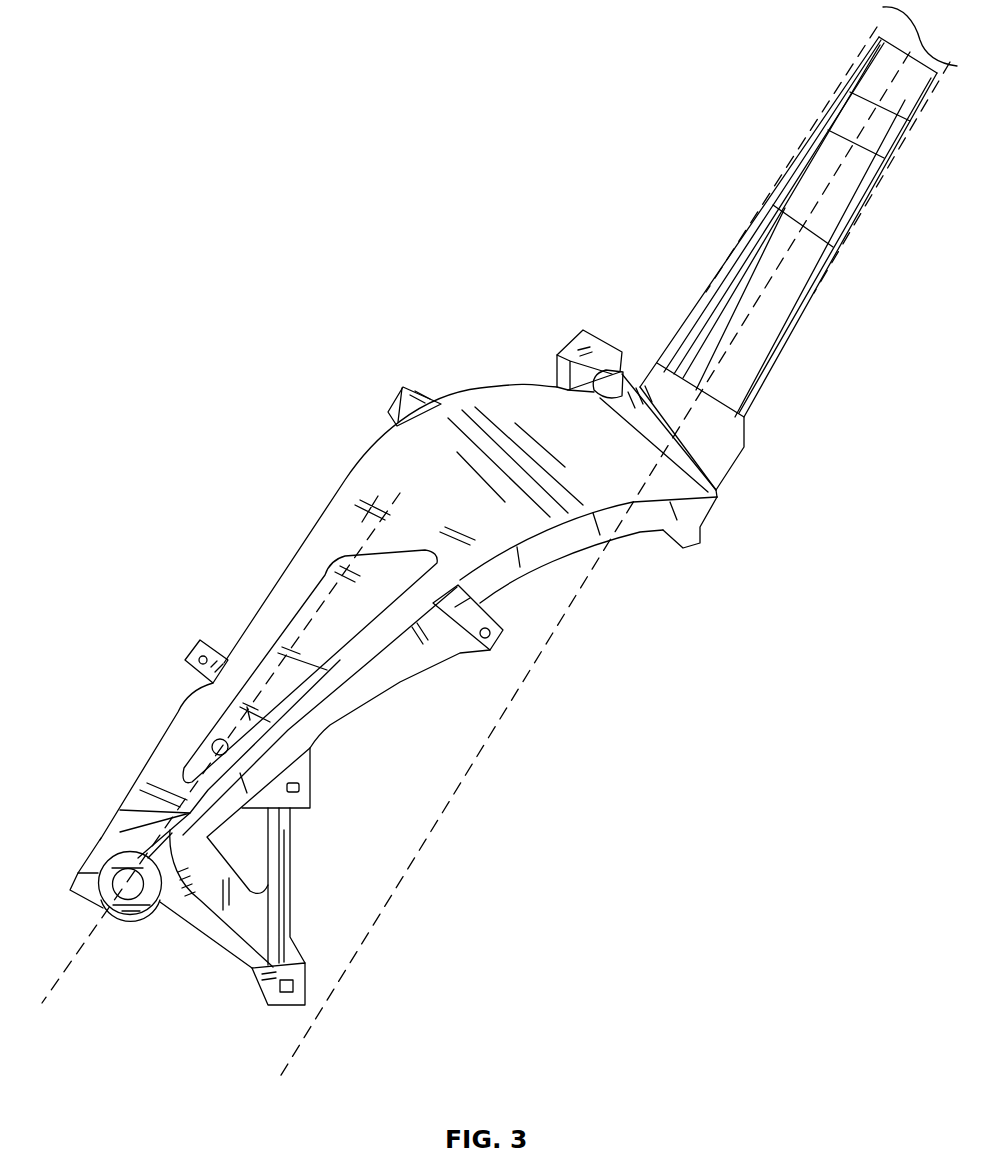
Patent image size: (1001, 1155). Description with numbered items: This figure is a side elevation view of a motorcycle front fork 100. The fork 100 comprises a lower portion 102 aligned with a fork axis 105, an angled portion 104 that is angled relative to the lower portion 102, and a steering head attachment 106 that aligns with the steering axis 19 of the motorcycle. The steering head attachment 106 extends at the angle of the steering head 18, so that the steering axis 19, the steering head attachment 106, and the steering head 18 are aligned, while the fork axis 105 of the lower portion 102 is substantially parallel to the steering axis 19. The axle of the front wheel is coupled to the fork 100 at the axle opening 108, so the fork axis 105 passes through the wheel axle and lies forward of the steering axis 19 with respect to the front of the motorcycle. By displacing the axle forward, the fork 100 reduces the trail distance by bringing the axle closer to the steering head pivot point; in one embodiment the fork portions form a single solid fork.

The fork 100 is at (374, 100).
The lower portion 102 is at (298, 563).
The angled portion 104 is at (513, 387).
The steering head attachment 106 is at (787, 342).
The axle opening 108 is at (90, 858).
The steering head 18 is at (858, 60).
The steering axis 19 is at (823, 200).
The fork axis 105 is at (62, 977).